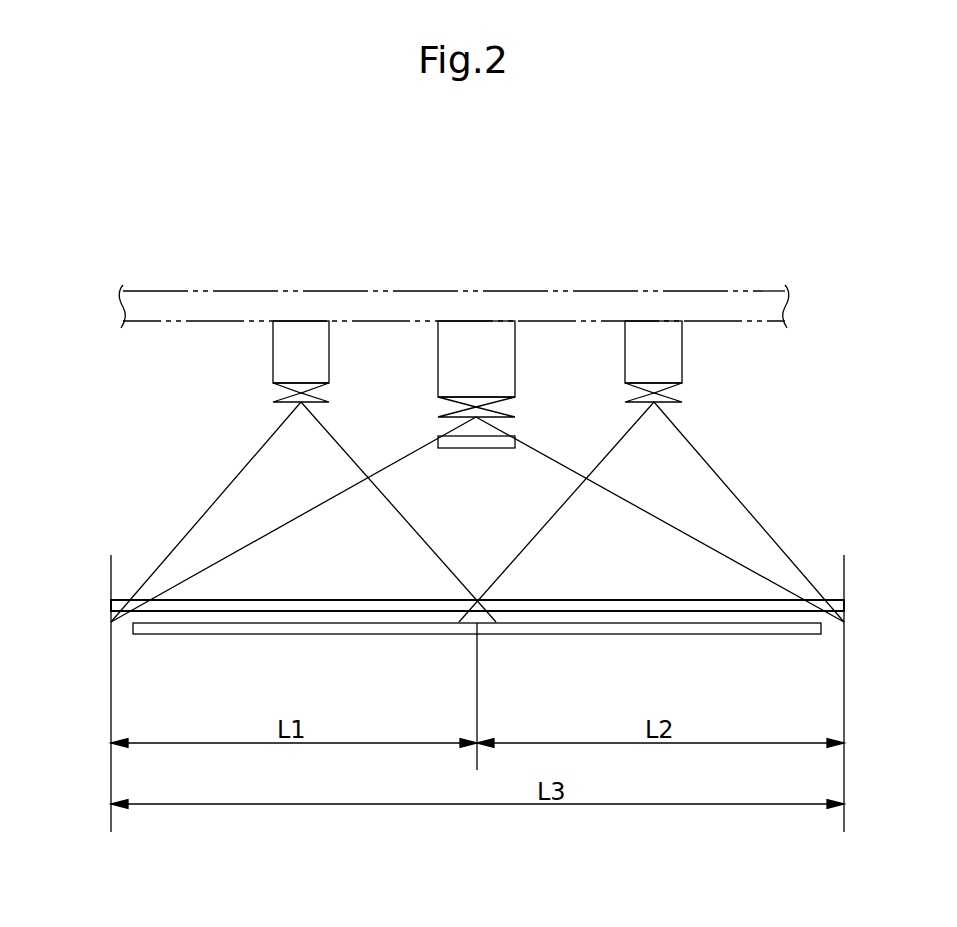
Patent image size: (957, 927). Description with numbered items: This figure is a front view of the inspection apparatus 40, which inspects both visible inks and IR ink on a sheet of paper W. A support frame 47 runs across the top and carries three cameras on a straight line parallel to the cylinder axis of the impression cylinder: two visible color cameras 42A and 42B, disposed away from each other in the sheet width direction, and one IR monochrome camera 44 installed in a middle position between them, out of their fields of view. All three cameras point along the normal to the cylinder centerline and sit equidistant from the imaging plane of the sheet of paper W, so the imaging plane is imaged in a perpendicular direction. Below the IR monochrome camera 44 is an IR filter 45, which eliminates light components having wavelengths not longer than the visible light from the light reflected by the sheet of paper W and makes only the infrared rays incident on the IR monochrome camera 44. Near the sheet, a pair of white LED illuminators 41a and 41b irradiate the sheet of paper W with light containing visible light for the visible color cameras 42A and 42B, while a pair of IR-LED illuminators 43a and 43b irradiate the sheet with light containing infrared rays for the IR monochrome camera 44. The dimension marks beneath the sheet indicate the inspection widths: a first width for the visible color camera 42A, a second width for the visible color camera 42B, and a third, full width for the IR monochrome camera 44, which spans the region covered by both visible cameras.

The inspection apparatus 40 is at (566, 266).
The support frame 47 is at (187, 302).
The IR monochrome camera 44 is at (448, 344).
The visible color camera 42A is at (290, 349).
The visible color camera 42B is at (667, 353).
The IR filter 45 is at (478, 442).
The white LED illuminator 41a is at (212, 586).
The white LED illuminator 41b is at (477, 605).
The IR-LED illuminator 43a is at (477, 605).
The IR-LED illuminator 43b is at (477, 605).
The sheet of paper W is at (170, 644).